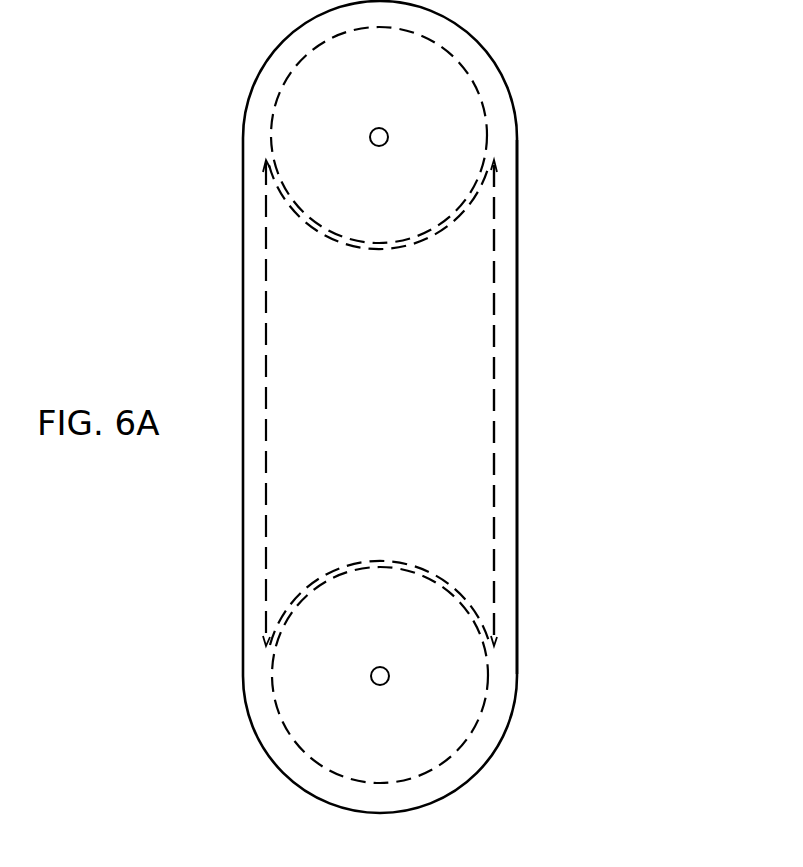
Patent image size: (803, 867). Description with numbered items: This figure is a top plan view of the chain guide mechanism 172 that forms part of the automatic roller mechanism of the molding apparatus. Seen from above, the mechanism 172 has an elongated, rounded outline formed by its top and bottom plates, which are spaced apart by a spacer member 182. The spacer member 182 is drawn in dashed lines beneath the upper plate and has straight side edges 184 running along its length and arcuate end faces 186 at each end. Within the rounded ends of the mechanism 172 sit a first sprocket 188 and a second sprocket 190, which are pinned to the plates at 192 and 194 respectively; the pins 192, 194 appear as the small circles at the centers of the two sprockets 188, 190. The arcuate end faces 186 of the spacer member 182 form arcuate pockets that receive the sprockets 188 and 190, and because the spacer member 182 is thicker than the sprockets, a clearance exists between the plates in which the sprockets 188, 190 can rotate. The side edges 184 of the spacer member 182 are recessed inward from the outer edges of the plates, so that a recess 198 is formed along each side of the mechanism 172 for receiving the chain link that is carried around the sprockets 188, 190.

The chain guide mechanism 172 is at (232, 535).
The spacer member 182 is at (452, 370).
The side edges 184 is at (268, 298).
The arcuate end faces 186 is at (362, 248).
The first sprocket 188 is at (447, 213).
The second sprocket 190 is at (423, 577).
The pin 192 is at (382, 134).
The pin 194 is at (388, 683).
The recess 198 is at (517, 440).